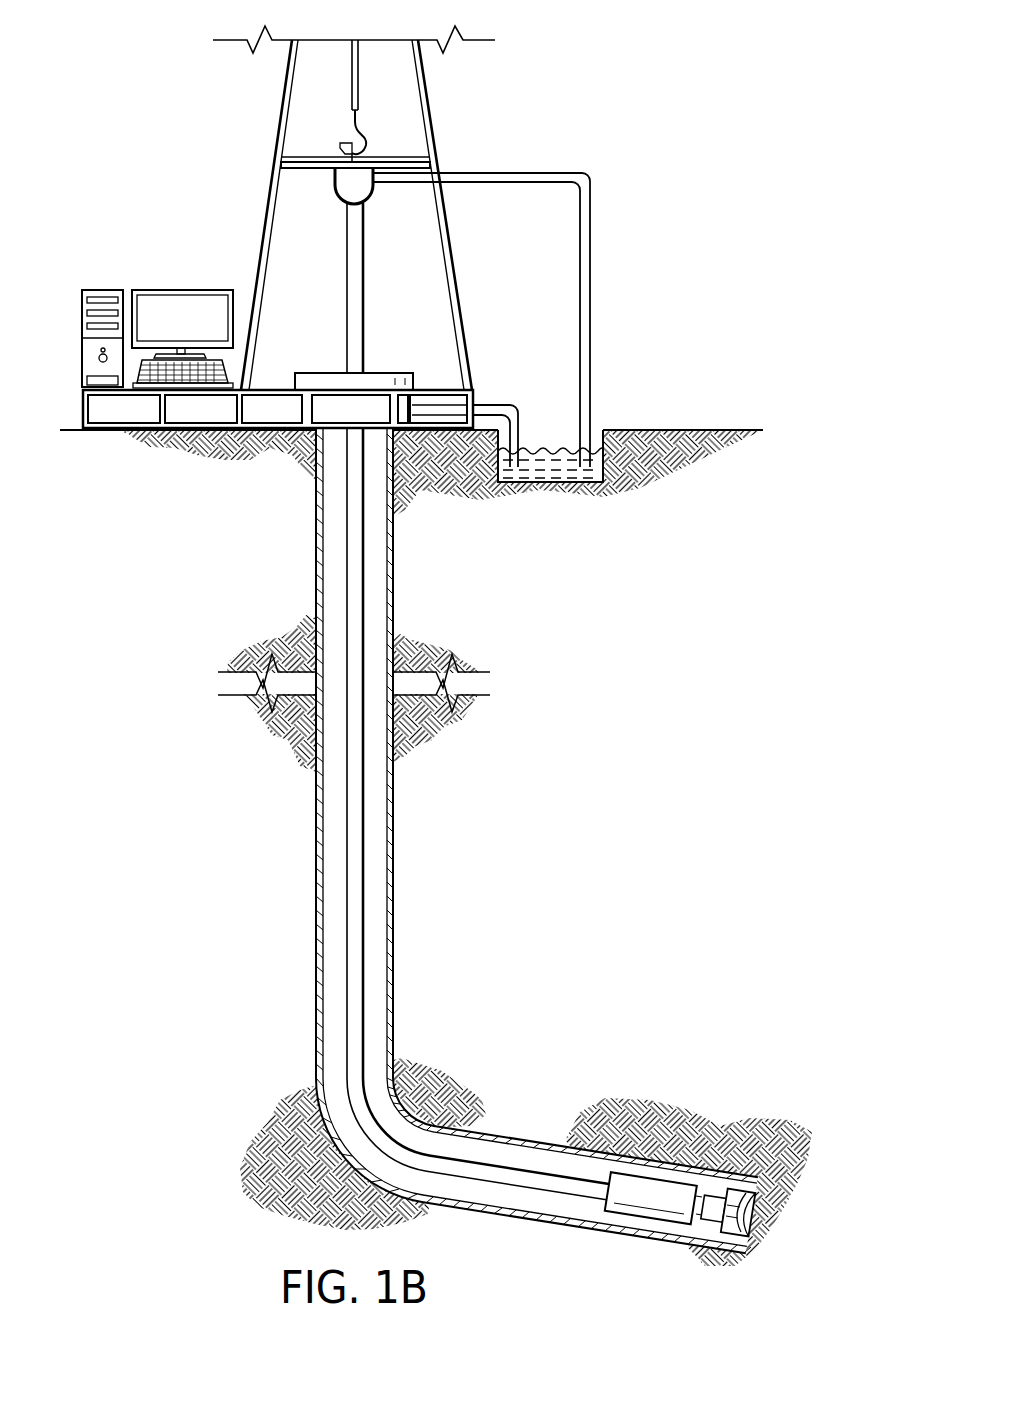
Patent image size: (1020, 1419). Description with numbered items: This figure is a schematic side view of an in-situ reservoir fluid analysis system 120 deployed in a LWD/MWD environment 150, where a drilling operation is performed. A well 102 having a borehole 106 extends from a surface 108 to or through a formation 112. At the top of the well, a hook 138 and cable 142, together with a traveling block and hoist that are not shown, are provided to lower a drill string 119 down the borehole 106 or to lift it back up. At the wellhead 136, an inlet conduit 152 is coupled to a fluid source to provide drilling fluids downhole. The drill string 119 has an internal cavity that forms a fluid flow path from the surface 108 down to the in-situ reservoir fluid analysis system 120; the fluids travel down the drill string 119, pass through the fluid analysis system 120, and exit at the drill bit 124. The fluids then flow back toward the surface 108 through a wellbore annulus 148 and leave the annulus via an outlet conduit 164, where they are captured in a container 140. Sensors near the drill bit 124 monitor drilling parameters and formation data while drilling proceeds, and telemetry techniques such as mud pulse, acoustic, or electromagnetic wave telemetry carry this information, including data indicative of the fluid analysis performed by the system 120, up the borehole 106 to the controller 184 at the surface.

The well 102 is at (382, 362).
The borehole 106 is at (390, 583).
The surface 108 is at (733, 430).
The formation 112 is at (557, 1094).
The drill string 119 is at (352, 947).
The in-situ reservoir fluid analysis system 120 is at (640, 1218).
The drill bit 124 is at (733, 1240).
The wellhead 136 is at (322, 373).
The hook 138 is at (370, 137).
The container 140 is at (555, 483).
The cable 142 is at (349, 100).
The wellbore annulus 148 is at (333, 513).
The LWD/MWD environment 150 is at (200, 190).
The inlet conduit 152 is at (533, 173).
The outlet conduit 164 is at (500, 405).
The controller 184 is at (103, 289).